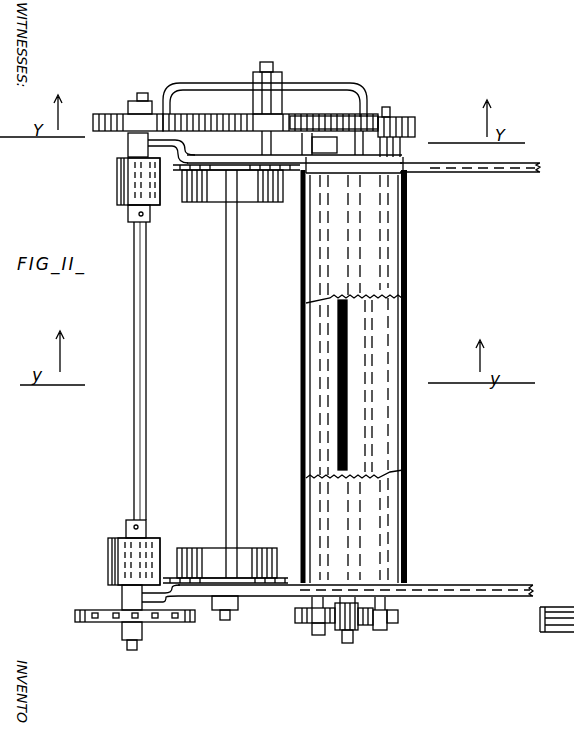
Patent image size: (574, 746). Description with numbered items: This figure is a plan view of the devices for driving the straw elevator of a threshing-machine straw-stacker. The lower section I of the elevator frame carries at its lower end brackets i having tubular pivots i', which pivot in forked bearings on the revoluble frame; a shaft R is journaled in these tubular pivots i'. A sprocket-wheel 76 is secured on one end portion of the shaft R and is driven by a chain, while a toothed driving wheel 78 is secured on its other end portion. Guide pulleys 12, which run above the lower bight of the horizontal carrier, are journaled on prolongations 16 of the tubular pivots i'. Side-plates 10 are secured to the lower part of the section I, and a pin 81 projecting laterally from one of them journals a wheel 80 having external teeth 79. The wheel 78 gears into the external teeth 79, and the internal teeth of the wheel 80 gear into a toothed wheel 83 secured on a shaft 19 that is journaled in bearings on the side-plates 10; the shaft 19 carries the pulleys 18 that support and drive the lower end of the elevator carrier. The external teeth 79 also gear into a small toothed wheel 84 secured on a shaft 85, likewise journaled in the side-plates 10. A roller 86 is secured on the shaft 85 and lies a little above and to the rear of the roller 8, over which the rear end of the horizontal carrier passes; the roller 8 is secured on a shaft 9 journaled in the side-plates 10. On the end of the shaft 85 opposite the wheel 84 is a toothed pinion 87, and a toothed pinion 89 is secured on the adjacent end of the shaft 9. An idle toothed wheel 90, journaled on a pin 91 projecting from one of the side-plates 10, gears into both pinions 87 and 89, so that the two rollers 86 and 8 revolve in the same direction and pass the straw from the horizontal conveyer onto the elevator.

The toothed driving wheel 78 is at (97, 112).
The toothed wheel 83 is at (207, 112).
The external teeth 79 is at (325, 118).
The wheel 80 is at (205, 83).
The pin 81 is at (268, 62).
The shaft 85 is at (388, 107).
The small toothed wheel 84 is at (415, 118).
The side-plates 10 is at (298, 157).
The lower section I is at (527, 168).
The tubular pivots i' is at (103, 371).
The brackets i is at (168, 403).
The guide pulleys 12 is at (120, 183).
The prolongations 16 is at (128, 210).
The shaft R is at (132, 405).
The sprocket-wheel 76 is at (98, 624).
The pulleys 18 is at (275, 200).
The shaft 19 is at (226, 330).
The roller 8 is at (305, 435).
The roller 86 is at (400, 442).
The toothed pinion 89 is at (303, 625).
The shaft 9 is at (318, 635).
The pin 91 is at (346, 643).
The idle toothed wheel 90 is at (363, 628).
The toothed pinion 87 is at (398, 620).